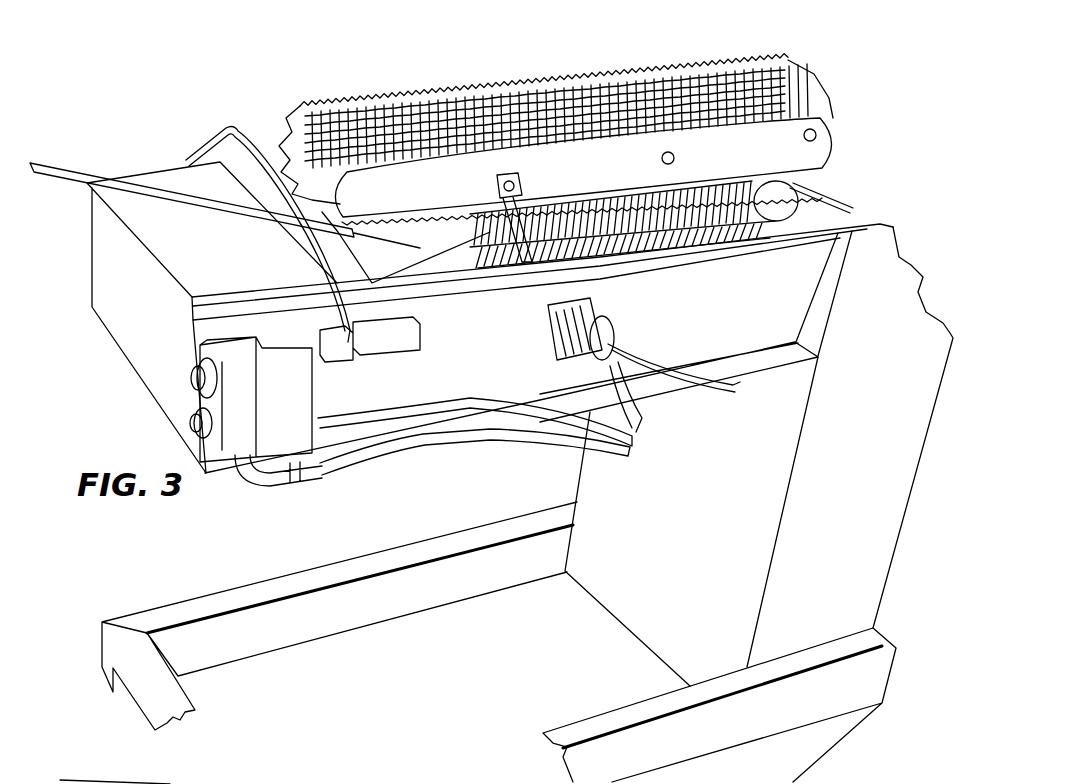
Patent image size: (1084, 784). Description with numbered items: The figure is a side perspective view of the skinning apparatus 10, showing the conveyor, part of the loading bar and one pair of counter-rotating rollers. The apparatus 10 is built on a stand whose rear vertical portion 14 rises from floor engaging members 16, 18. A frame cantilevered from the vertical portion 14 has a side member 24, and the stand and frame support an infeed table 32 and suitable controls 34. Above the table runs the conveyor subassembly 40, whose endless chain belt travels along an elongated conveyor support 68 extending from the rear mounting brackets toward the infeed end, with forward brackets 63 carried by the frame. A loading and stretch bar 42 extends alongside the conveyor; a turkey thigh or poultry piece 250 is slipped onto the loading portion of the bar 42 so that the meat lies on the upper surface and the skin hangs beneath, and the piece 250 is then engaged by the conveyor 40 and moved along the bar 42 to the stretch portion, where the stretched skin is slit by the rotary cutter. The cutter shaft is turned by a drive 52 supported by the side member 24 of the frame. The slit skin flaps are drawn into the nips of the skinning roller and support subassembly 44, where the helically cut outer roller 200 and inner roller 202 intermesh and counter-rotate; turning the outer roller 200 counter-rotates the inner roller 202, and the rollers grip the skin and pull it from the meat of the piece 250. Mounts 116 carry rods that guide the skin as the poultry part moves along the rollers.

The skinning apparatus 10 is at (255, 96).
The turkey thigh 250 is at (248, 135).
The loading and stretch bar 42 is at (73, 165).
The infeed table 32 is at (147, 207).
The conveyor subassembly 40 is at (490, 90).
The conveyor support 68 is at (700, 145).
The forward brackets 63 is at (513, 208).
The inner skinning roller 202 is at (770, 179).
The outer skinning roller 200 is at (790, 203).
The skinning roller and support subassembly 44 is at (850, 209).
The side member 24 is at (782, 295).
The drive 52 is at (594, 323).
The controls 34 is at (162, 380).
The floor engaging member 16 is at (343, 560).
The rear vertical portion 14 is at (630, 605).
The floor engaging member 18 is at (620, 718).
The mounts 116 is at (185, 770).